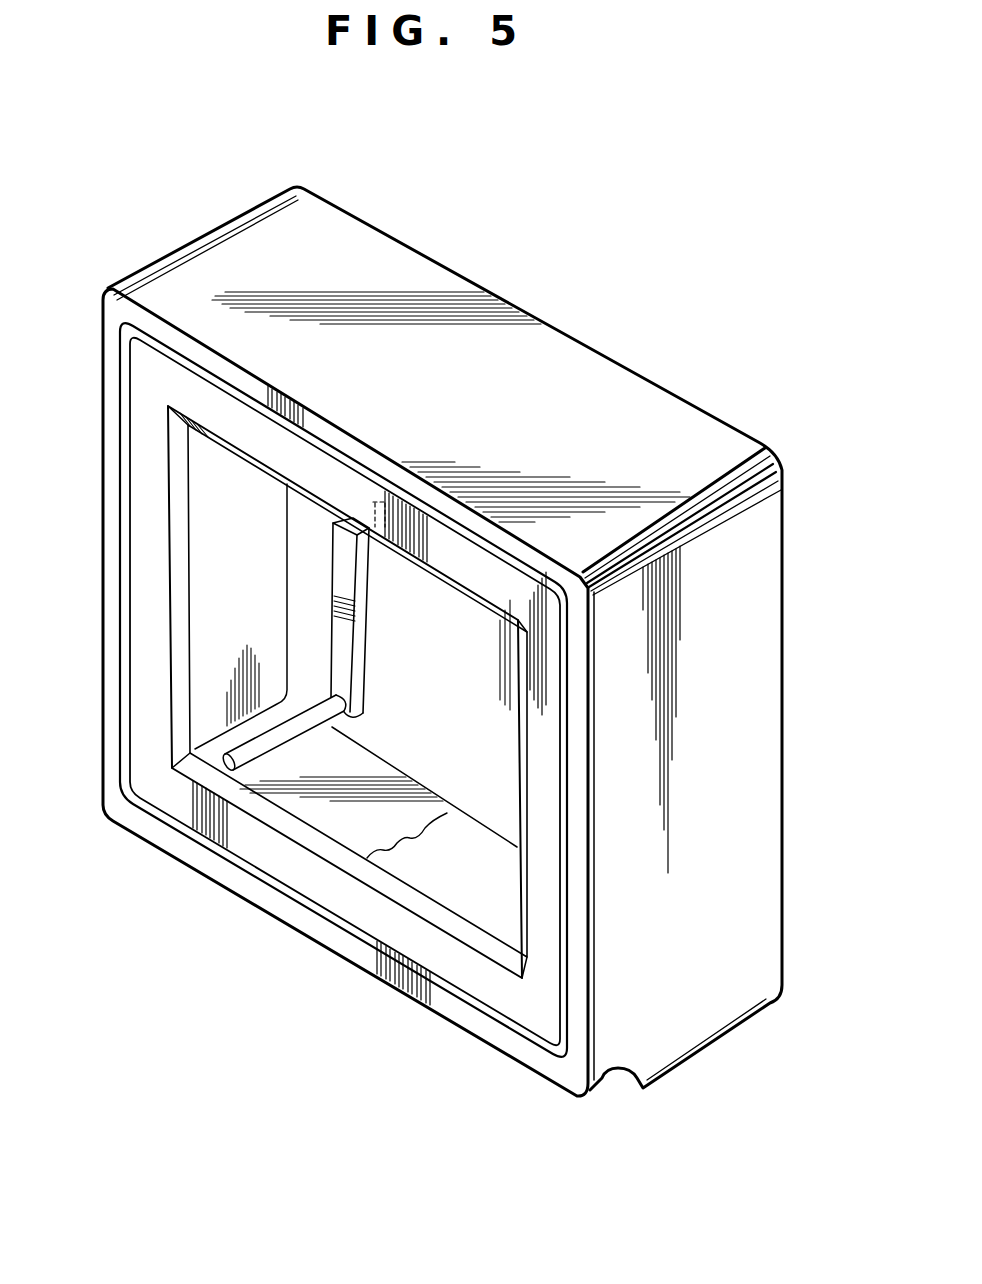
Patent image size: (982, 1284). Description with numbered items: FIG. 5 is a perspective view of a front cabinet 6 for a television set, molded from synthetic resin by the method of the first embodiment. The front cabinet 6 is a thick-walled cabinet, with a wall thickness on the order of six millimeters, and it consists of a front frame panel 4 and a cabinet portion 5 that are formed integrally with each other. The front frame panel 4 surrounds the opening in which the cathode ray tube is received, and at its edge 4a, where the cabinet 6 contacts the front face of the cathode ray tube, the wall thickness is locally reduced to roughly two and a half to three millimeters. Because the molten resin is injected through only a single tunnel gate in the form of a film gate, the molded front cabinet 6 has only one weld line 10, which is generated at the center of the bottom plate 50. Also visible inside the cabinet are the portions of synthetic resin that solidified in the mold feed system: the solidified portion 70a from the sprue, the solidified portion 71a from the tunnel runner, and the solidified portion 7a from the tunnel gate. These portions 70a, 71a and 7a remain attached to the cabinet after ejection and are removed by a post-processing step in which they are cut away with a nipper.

The front frame panel 4 is at (244, 423).
The edge of the front frame panel 4a is at (212, 427).
The cabinet portion 5 is at (550, 355).
The front cabinet 6 is at (687, 380).
The solidified resin portion in the tunnel gate 7a is at (285, 486).
The solidified resin portion in the tunnel runner 71a is at (340, 608).
The solidified resin portion in the sprue 70a is at (300, 733).
The bottom plate 50 is at (307, 802).
The weld line 10 is at (408, 845).